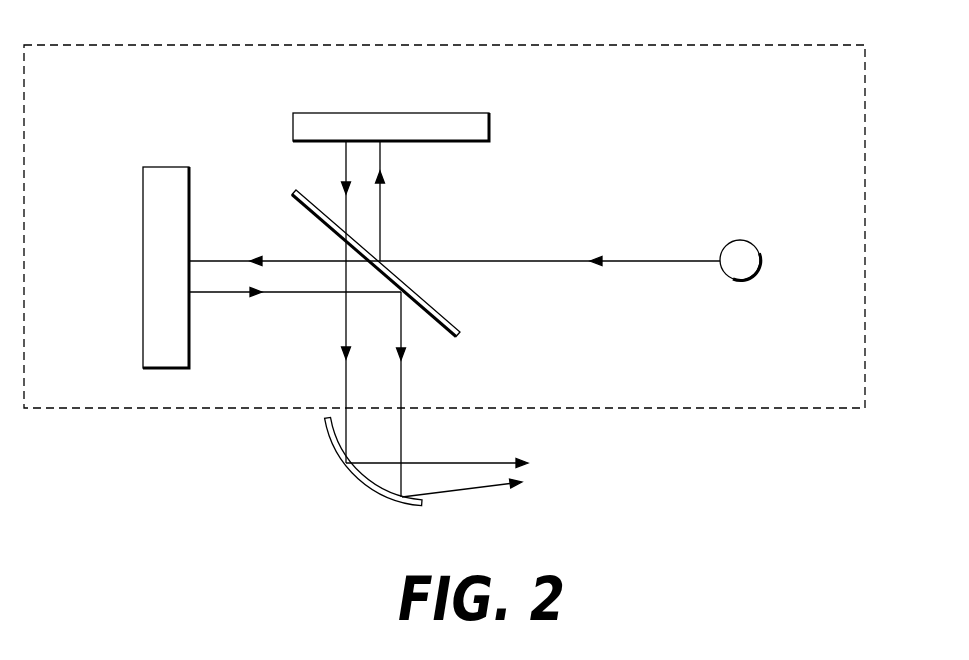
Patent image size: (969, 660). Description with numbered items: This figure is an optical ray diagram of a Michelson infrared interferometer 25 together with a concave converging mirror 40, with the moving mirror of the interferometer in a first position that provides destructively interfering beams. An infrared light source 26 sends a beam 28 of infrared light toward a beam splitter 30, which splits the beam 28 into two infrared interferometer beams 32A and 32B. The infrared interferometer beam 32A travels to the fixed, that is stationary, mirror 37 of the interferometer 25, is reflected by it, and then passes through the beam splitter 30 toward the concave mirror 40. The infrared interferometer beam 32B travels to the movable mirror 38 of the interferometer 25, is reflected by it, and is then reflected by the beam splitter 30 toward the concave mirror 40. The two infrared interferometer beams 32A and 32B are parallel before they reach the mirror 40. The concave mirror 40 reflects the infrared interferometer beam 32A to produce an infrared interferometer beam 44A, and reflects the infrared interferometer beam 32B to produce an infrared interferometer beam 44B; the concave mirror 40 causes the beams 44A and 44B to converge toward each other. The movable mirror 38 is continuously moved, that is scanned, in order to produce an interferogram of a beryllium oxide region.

The Michelson infrared interferometer 25 is at (749, 45).
The infrared light source 26 is at (752, 245).
The beam 28 is at (617, 260).
The beam splitter 30 is at (438, 311).
The infrared interferometer beam 32A is at (380, 217).
The infrared interferometer beam 32B is at (204, 260).
The fixed mirror 37 is at (447, 113).
The movable mirror 38 is at (143, 213).
The concave converging mirror 40 is at (360, 486).
The infrared interferometer beam 44A is at (488, 463).
The infrared interferometer beam 44B is at (483, 487).